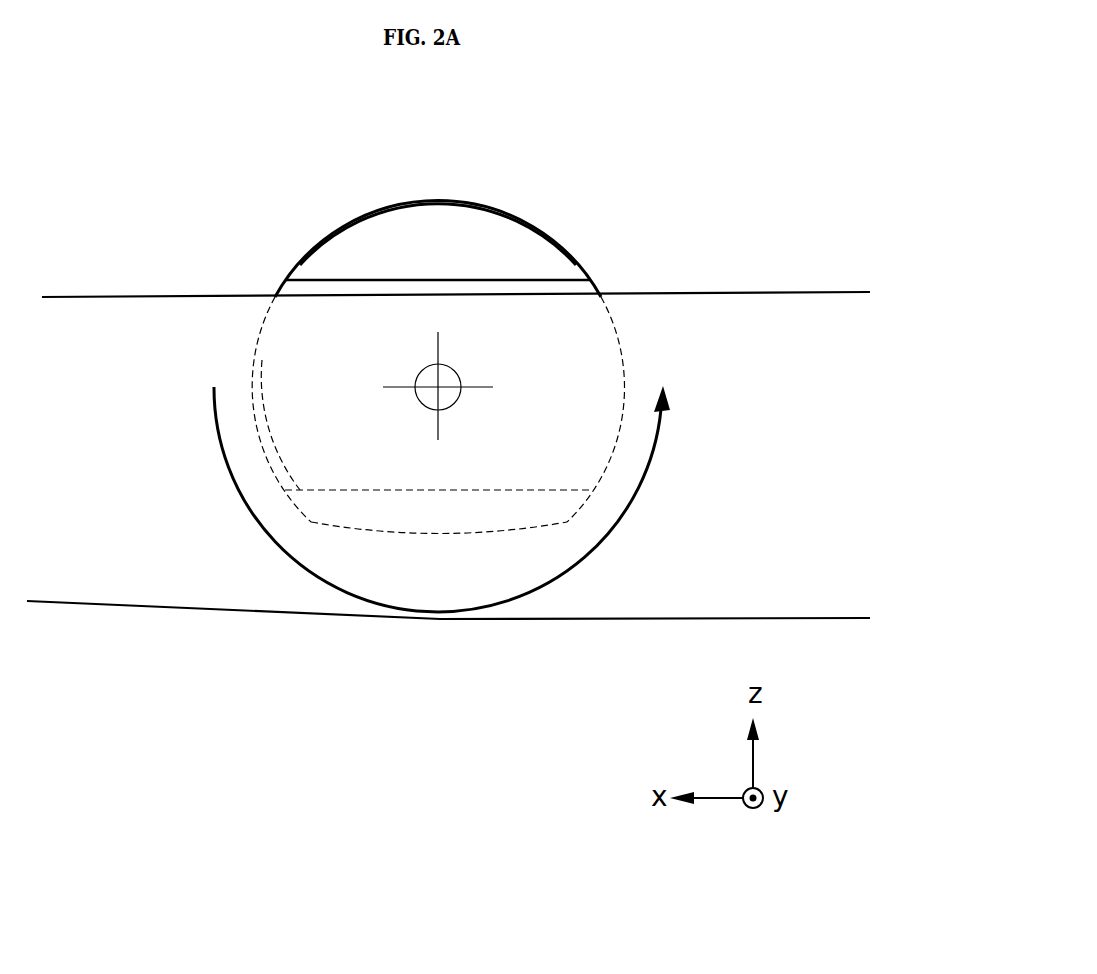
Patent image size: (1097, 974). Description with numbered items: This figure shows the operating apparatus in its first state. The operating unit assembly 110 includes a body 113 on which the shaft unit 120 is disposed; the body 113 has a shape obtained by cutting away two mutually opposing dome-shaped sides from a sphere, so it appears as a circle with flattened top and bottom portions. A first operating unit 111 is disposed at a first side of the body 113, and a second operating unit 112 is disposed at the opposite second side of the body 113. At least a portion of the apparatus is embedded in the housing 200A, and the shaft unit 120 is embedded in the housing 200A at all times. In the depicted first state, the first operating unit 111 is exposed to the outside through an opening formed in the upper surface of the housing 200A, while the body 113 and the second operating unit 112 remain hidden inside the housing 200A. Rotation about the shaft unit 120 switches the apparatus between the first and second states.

The operating unit assembly 110 is at (346, 214).
The first operating unit 111 is at (480, 230).
The second operating unit 112 is at (372, 508).
The body 113 is at (300, 373).
The shaft unit 120 is at (438, 387).
The housing 200A is at (143, 325).